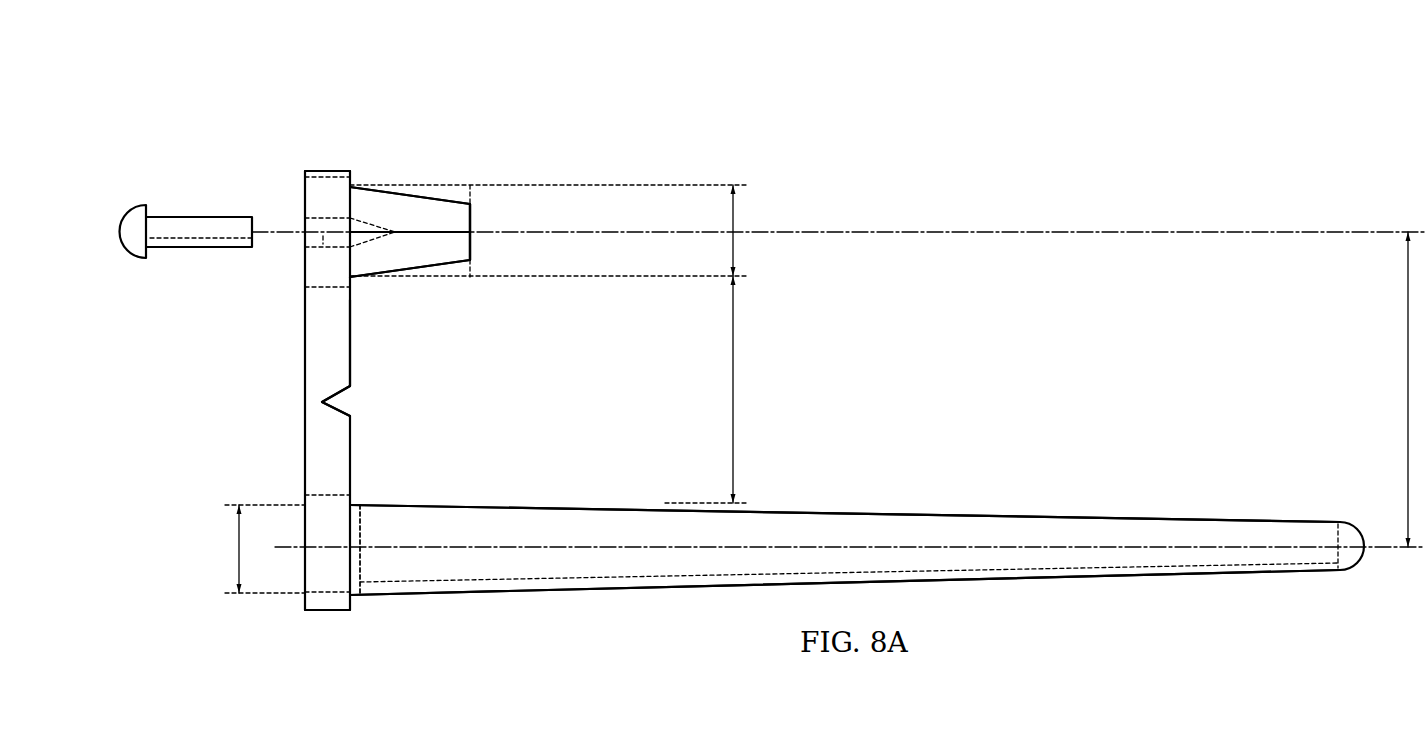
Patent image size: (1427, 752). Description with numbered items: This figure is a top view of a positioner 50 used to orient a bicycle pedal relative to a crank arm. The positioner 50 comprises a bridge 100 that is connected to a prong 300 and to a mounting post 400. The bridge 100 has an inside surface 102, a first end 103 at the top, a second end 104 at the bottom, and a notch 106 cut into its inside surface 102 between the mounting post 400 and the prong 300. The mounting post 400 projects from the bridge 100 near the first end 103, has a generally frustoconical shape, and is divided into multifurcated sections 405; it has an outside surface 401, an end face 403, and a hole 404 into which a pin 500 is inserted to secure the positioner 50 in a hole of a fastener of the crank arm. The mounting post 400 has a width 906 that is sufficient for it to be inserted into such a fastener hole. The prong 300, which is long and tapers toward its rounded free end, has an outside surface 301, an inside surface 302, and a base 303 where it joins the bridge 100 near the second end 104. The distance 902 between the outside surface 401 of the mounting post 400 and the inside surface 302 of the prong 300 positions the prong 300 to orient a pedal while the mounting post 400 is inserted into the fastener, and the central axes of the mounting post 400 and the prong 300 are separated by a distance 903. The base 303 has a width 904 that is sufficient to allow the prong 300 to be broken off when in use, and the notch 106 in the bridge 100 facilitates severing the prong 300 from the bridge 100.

The positioner 50 is at (603, 115).
The bridge 100 is at (318, 349).
The inside surface 102 is at (353, 351).
The first end 103 is at (327, 170).
The second end 104 is at (322, 612).
The notch 106 is at (340, 412).
The prong 300 is at (1190, 572).
The outside surface 301 is at (658, 588).
The inside surface 302 is at (583, 505).
The base 303 is at (355, 565).
The mounting post 400 is at (435, 187).
The outside surface 401 is at (378, 186).
The end face of tip 403 is at (453, 237).
The hole 404 is at (325, 243).
The multifurcated sections 405 is at (472, 214).
The pin 500 is at (205, 216).
The distance 902 is at (737, 387).
The distance 903 is at (1405, 392).
The width 904 is at (230, 550).
The width 906 is at (738, 218).